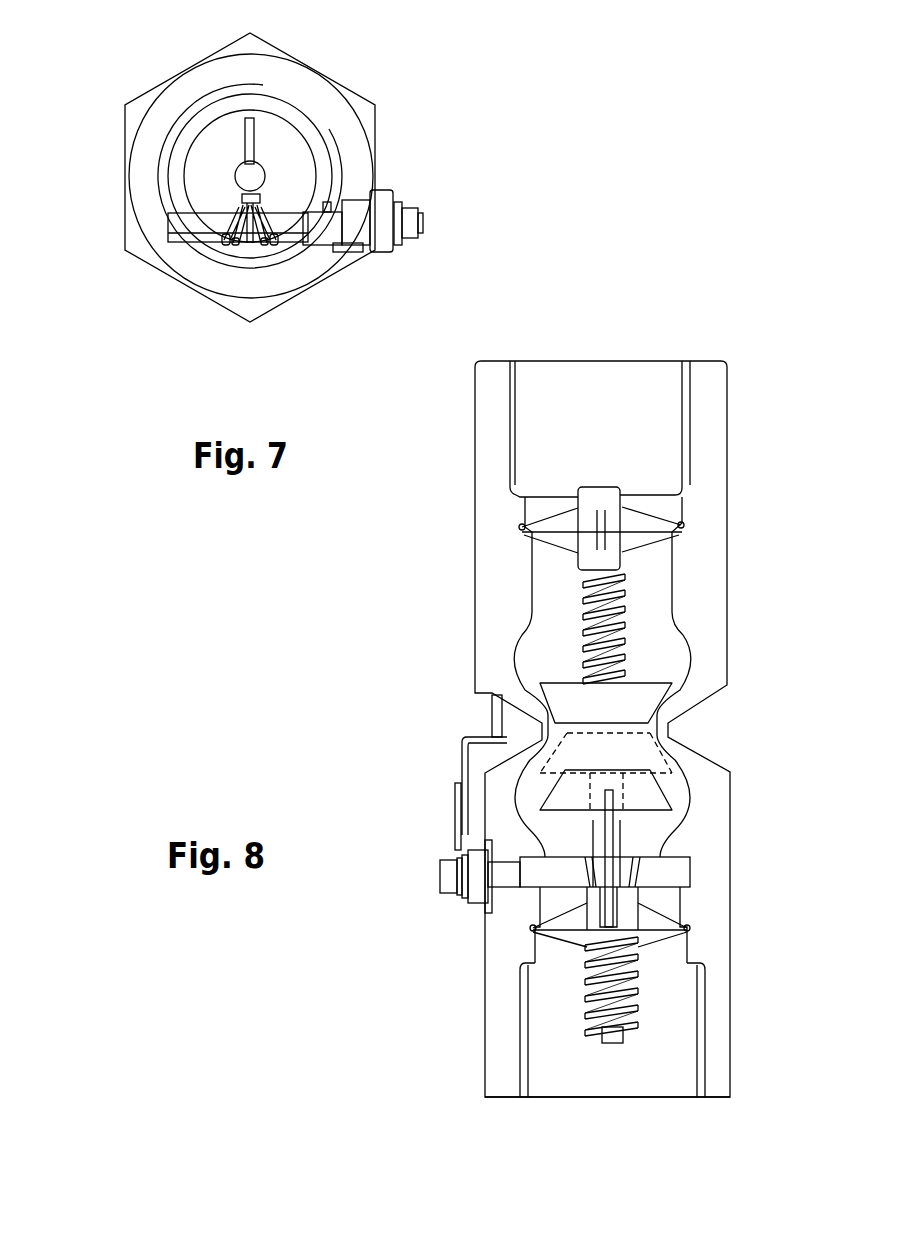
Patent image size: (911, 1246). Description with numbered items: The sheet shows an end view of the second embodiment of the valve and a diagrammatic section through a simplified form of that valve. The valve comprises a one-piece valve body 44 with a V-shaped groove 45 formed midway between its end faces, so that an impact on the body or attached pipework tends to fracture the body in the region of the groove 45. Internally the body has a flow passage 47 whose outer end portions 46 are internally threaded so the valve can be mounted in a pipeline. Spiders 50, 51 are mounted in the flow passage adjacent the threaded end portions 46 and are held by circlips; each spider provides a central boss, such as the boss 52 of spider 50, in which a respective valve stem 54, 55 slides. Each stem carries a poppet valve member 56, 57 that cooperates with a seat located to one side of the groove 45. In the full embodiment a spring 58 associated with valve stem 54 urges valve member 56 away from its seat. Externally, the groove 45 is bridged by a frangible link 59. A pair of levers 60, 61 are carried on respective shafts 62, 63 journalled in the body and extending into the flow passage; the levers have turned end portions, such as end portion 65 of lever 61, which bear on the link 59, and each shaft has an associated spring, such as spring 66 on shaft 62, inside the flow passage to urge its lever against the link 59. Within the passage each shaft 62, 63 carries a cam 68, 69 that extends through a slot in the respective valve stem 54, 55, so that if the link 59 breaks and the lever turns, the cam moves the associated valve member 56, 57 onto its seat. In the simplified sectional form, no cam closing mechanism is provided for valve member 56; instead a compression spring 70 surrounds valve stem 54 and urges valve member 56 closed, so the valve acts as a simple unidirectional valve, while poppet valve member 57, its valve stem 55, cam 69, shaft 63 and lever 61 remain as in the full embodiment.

In FIG. 7, the valve body 44 is at (185, 85).
In FIG. 8, the valve body 44 is at (698, 520).
In FIG. 8, the V-shaped groove 45 is at (722, 687).
In FIG. 8, the outer end portions 46 is at (517, 395).
In FIG. 8, the flow passage 47 is at (558, 1072).
In FIG. 8, the spider 50 is at (628, 515).
In FIG. 8, the spider 51 is at (663, 927).
In FIG. 8, the central boss 52 is at (615, 487).
In FIG. 7, the valve stem 54 is at (265, 172).
In FIG. 8, the valve stem 54 is at (625, 640).
In FIG. 8, the valve stem 55 is at (615, 1010).
In FIG. 7, the poppet valve member 56 is at (212, 158).
In FIG. 8, the poppet valve member 56 is at (635, 688).
In FIG. 8, the poppet valve member 57 is at (653, 792).
In FIG. 8, the spring 58 is at (637, 987).
In FIG. 8, the frangible link 59 is at (493, 703).
In FIG. 7, the lever 60 is at (405, 250).
In FIG. 8, the lever 61 is at (470, 813).
In FIG. 7, the shaft 62 is at (190, 225).
In FIG. 8, the shaft 63 is at (665, 863).
In FIG. 8, the end portion 65 is at (470, 733).
In FIG. 7, the spring 66 is at (285, 237).
In FIG. 7, the cam 68 is at (255, 135).
In FIG. 8, the cam 69 is at (612, 832).
In FIG. 8, the compression spring 70 is at (625, 602).